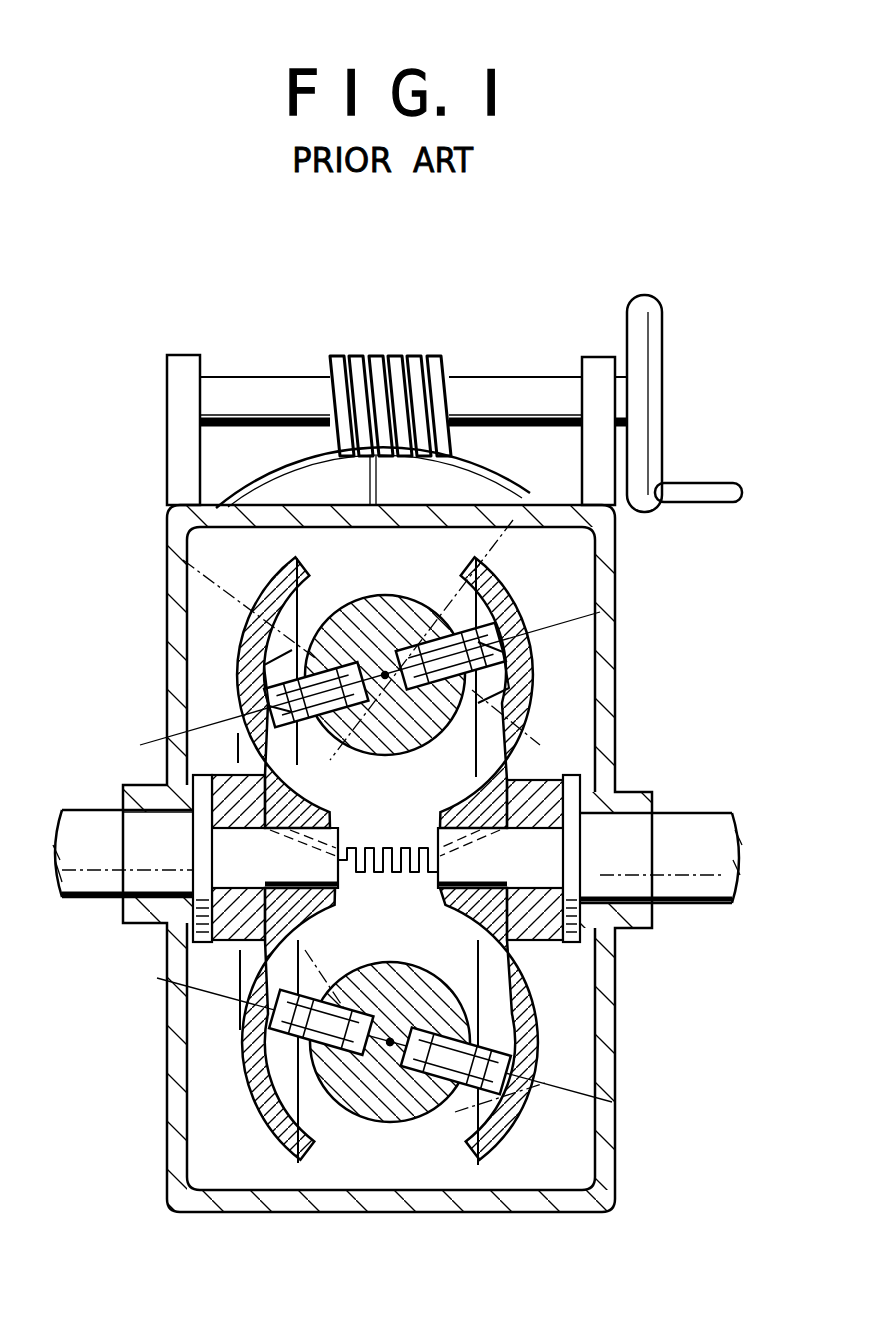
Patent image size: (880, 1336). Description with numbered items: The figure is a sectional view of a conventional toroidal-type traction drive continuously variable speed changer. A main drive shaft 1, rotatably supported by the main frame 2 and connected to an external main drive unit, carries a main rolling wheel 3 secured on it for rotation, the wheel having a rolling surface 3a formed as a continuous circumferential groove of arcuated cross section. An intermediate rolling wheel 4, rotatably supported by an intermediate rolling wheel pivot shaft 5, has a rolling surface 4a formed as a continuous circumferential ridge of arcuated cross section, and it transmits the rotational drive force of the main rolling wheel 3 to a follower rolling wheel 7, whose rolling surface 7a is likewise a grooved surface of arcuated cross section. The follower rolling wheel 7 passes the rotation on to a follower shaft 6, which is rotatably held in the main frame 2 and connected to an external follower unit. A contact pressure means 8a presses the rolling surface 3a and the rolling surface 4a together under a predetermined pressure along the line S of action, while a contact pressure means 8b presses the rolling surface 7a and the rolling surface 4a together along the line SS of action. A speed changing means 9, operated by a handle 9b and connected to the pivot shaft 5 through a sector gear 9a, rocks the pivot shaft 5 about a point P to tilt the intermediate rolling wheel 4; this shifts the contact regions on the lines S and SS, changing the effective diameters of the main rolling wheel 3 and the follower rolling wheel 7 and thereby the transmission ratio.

The main drive shaft 1 is at (673, 905).
The main frame 2 is at (508, 1212).
The main rolling wheel 3 is at (535, 727).
The rolling surface 3a is at (505, 702).
The intermediate rolling wheel 4 is at (432, 691).
The rolling surface 4a is at (497, 668).
The intermediate rolling wheel pivot shaft 5 is at (413, 612).
The follower shaft 6 is at (103, 882).
The follower rolling wheel 7 is at (283, 603).
The rolling surface 7a is at (300, 670).
The contact pressure means 8a is at (557, 957).
The contact pressure means 8b is at (205, 948).
The speed changing means 9 is at (467, 350).
The sector gear 9a is at (307, 452).
The handle 9b is at (664, 325).
The point P is at (385, 674).
The line of action of the contact pressure S is at (547, 628).
The line of action of the contact pressure SS is at (212, 722).